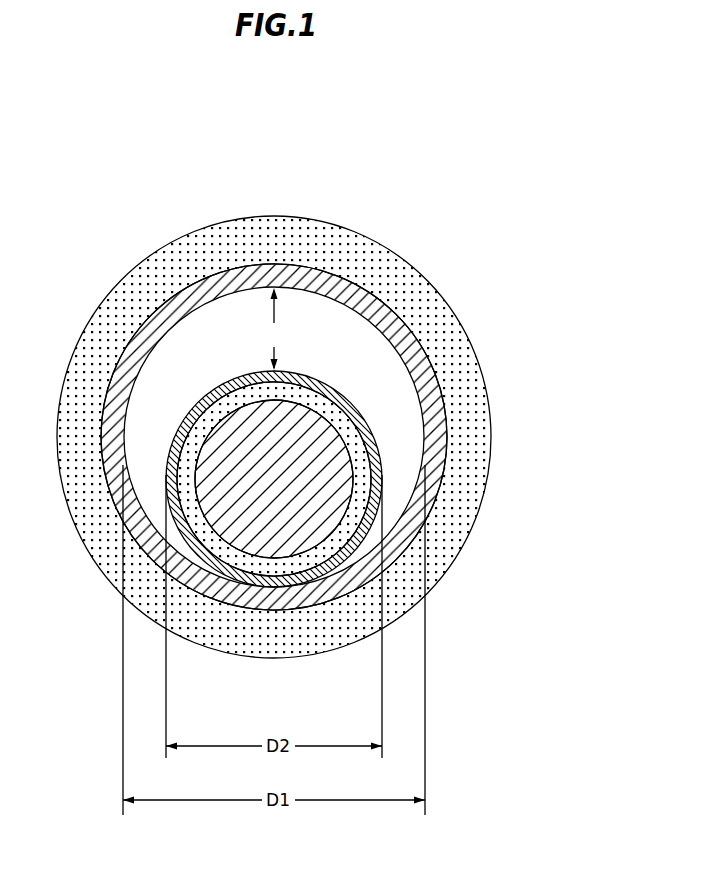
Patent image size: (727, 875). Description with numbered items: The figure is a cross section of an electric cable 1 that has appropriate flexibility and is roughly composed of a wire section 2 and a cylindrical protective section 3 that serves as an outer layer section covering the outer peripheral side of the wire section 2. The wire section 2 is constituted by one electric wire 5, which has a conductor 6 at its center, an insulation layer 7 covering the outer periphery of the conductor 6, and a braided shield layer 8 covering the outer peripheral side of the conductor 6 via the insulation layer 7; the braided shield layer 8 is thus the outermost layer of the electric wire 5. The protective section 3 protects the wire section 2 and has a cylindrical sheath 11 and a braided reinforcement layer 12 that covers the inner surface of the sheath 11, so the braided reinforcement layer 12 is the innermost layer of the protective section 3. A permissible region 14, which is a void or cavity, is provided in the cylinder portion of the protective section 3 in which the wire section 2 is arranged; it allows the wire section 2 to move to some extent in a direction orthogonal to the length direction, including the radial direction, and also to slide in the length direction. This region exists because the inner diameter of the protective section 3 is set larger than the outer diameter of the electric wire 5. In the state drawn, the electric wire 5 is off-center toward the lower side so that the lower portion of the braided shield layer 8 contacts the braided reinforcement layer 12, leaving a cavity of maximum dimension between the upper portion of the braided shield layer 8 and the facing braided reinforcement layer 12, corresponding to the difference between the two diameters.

The electric cable 1 is at (430, 213).
The wire section 2 is at (330, 368).
The protective section 3 is at (168, 190).
The electric wire 5 is at (545, 307).
The conductor 6 is at (333, 421).
The insulation layer 7 is at (360, 438).
The braided shield layer 8 is at (380, 457).
The sheath 11 is at (145, 282).
The braided reinforcement layer 12 is at (210, 284).
The permissible region 14 is at (303, 327).